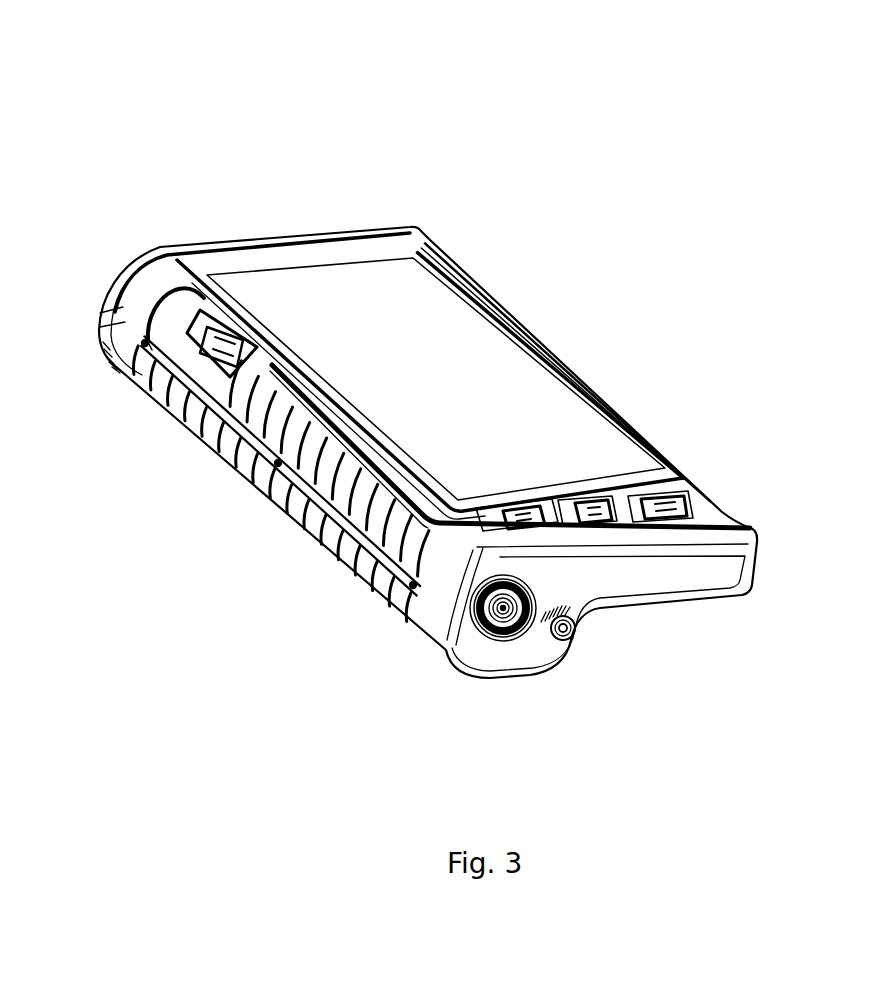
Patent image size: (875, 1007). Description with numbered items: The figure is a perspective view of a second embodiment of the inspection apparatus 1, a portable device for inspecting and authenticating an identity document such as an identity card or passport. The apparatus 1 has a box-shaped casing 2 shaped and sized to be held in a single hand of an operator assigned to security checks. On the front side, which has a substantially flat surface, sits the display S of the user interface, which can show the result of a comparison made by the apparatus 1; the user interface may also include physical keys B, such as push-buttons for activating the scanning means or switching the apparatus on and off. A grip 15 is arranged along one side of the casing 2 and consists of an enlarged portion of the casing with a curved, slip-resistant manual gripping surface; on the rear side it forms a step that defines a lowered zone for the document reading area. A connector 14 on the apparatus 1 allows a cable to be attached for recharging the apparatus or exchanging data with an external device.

The inspection apparatus 1 is at (600, 160).
The casing 2 is at (157, 253).
The display S is at (475, 370).
The buttons B is at (535, 505).
The grip 15 is at (303, 515).
The connector 14 is at (512, 623).